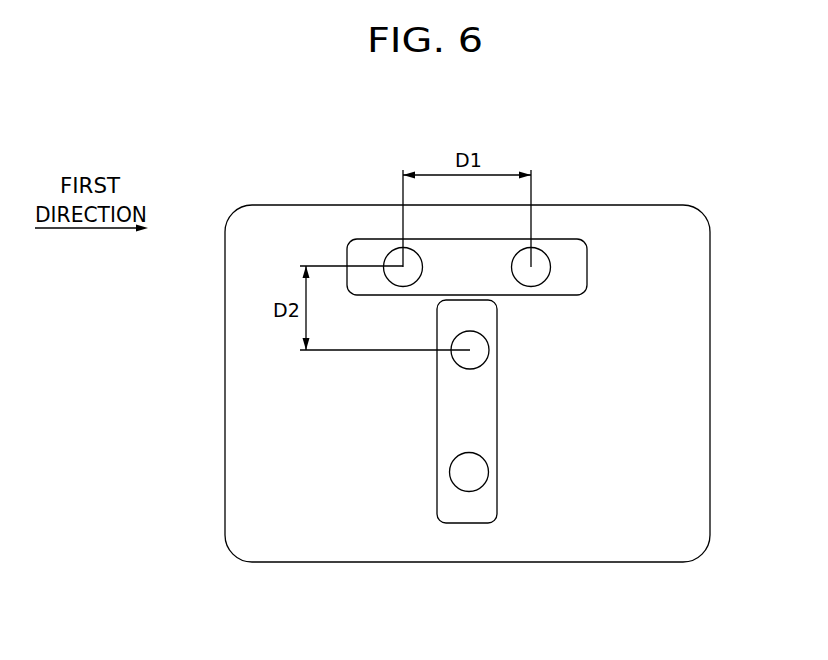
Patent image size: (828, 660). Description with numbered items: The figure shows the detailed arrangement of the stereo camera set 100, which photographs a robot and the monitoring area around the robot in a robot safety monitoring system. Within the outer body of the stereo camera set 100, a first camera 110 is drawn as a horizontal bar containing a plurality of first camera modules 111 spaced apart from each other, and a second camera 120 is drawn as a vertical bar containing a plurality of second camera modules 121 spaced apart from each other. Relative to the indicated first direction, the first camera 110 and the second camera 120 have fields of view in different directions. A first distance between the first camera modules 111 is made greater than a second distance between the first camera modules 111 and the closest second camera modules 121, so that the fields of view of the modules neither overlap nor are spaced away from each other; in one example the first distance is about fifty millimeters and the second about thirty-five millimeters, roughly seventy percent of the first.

The stereo camera set 100 is at (469, 562).
The first camera 110 is at (560, 296).
The first camera modules 111 is at (418, 281).
The second camera 120 is at (437, 420).
The second camera modules 121 is at (485, 365).